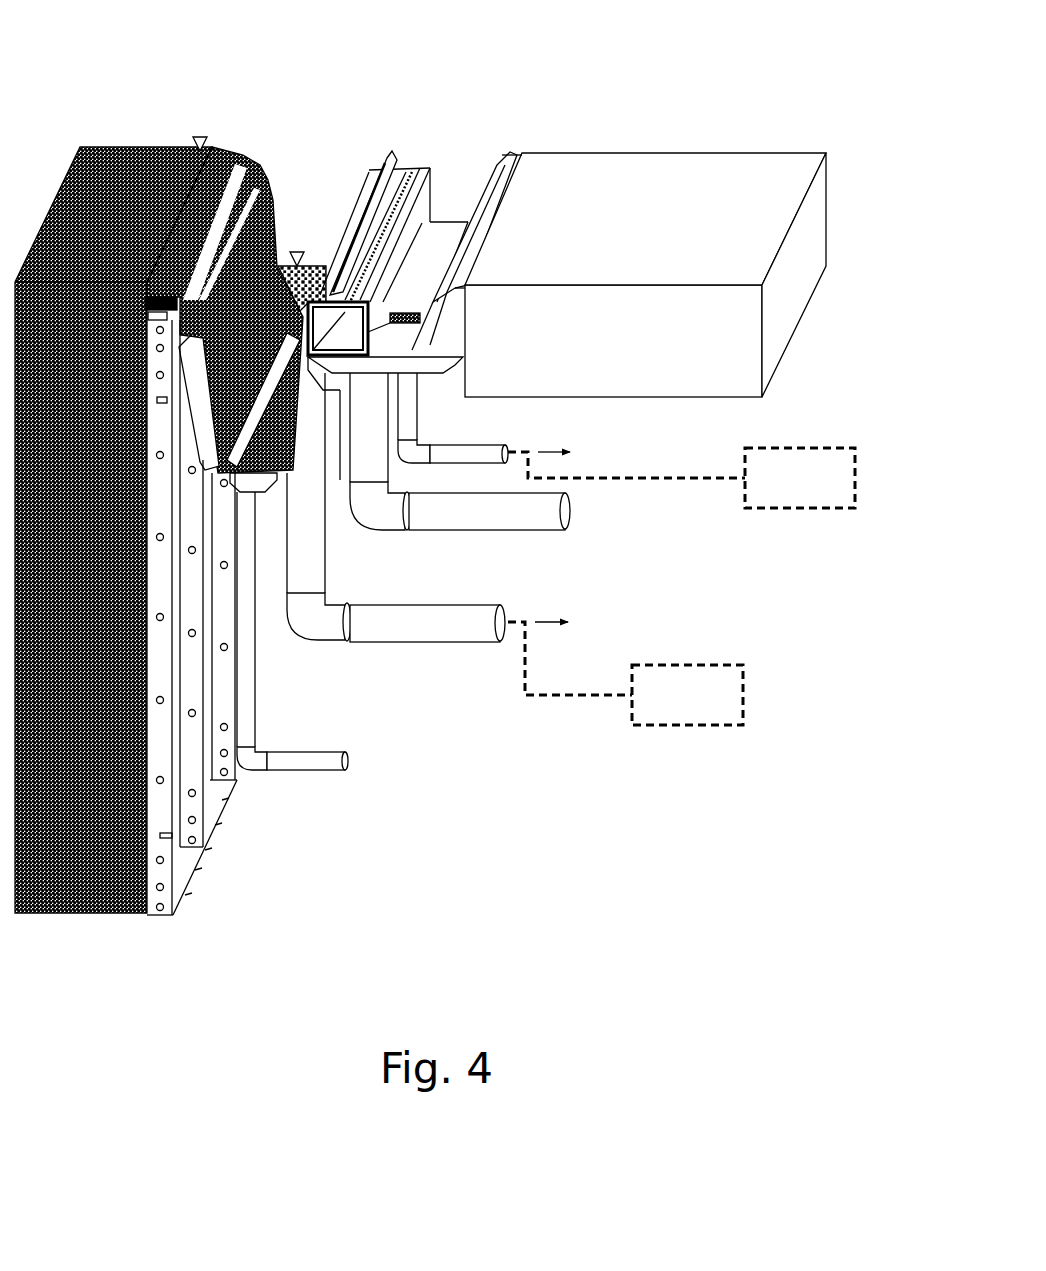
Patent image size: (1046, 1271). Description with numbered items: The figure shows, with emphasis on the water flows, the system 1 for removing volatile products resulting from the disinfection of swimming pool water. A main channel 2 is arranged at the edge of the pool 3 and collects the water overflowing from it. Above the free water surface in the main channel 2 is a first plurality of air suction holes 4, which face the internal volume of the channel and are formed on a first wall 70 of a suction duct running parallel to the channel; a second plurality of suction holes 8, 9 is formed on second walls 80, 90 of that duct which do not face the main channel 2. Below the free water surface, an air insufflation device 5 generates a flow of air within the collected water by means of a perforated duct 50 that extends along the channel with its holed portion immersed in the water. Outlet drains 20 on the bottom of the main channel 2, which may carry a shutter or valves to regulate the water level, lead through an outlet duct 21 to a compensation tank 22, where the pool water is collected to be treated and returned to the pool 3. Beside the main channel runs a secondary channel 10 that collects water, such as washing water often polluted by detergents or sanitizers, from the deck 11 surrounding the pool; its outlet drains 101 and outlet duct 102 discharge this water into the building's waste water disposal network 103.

The system for the removal of products resulting from the disinfection of water 1 is at (697, 783).
The main channel 2 is at (283, 463).
The pool 3 is at (82, 510).
The air suction holes 4 is at (330, 313).
The air insufflation device 5 is at (272, 413).
The second plurality of suction holes 8 is at (437, 178).
The second plurality of suction holes 9 is at (423, 163).
The secondary channel 10 is at (463, 218).
The deck 11 is at (737, 350).
The outlet drains 20 is at (297, 256).
The outlet duct 21 is at (459, 642).
The compensation tank 22 is at (683, 665).
The perforated duct 50 is at (282, 387).
The first wall 70 is at (310, 325).
The second wall 80 is at (367, 332).
The second wall 90 is at (370, 175).
The outlet drains 101 is at (420, 320).
The outlet duct 102 is at (458, 445).
The waste water disposal network 103 is at (840, 448).